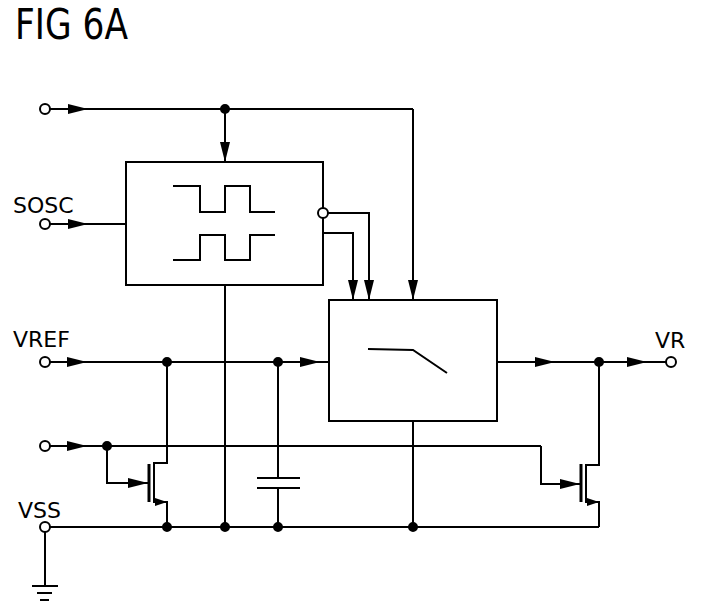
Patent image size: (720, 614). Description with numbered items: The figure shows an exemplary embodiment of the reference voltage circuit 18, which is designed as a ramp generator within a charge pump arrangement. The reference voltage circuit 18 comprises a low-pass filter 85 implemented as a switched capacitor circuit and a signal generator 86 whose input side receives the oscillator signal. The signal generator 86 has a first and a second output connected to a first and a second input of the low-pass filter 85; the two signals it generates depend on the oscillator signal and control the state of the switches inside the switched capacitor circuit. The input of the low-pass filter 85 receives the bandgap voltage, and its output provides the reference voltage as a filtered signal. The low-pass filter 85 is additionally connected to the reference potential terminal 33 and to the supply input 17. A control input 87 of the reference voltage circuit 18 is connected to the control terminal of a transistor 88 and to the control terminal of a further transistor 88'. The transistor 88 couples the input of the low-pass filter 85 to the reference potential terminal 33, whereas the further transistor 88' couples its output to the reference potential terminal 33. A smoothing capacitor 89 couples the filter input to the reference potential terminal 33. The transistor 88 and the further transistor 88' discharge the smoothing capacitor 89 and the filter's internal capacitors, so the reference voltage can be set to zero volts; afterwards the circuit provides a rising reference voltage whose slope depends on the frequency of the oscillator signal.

The supply input 17 is at (46, 115).
The reference voltage circuit 18 is at (587, 119).
The reference potential terminal 33 is at (50, 585).
The low-pass filter 85 is at (452, 298).
The signal generator 86 is at (172, 287).
The control input 87 is at (45, 440).
The transistor 88 is at (162, 444).
The further transistor 88' is at (598, 444).
The smoothing capacitor 89 is at (300, 483).